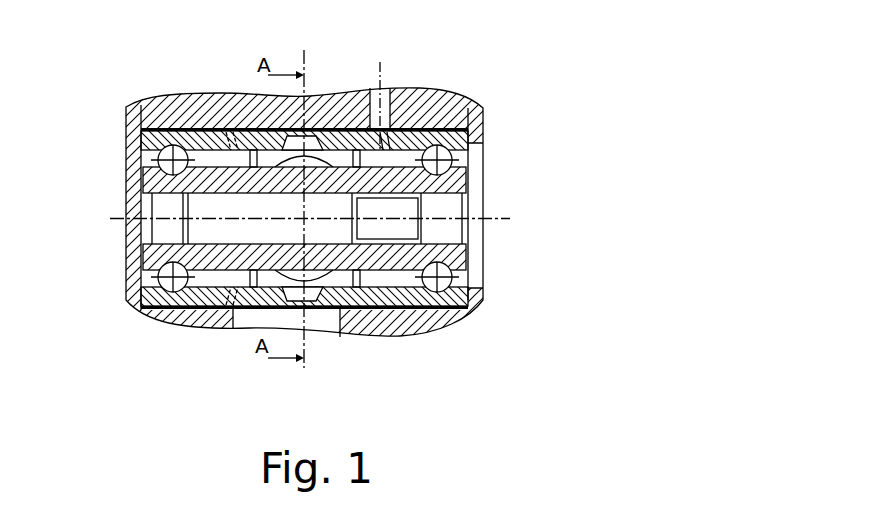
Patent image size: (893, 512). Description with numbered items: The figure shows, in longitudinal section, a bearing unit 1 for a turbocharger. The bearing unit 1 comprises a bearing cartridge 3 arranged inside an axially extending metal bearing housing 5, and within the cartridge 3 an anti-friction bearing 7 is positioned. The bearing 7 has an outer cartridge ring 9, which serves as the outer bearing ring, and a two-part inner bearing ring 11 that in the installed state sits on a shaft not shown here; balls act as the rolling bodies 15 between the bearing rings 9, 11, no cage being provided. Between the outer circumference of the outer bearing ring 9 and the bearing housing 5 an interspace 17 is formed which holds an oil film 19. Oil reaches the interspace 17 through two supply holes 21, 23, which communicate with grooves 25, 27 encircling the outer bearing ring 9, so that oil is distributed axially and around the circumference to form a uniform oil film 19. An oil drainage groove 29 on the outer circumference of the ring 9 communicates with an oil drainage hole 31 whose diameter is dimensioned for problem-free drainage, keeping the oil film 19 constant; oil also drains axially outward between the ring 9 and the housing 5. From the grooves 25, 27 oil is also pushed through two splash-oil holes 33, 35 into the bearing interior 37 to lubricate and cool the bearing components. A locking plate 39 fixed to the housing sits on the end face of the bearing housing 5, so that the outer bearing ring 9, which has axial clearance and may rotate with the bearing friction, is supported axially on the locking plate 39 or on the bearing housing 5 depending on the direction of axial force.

The bearing unit 1 is at (533, 77).
The bearing cartridge 3 is at (99, 313).
The bearing housing 5 is at (462, 112).
The anti-friction bearing 7 is at (497, 153).
The outer cartridge ring 9 is at (480, 140).
The inner bearing ring 11 is at (150, 183).
The rolling bodies 15 is at (455, 162).
The interspace 17 is at (282, 202).
The oil film 19 is at (263, 119).
The supply hole 21 is at (218, 106).
The supply hole 23 is at (384, 100).
The groove 25 is at (243, 140).
The groove 27 is at (370, 100).
The oil drainage groove 29 is at (314, 135).
The oil drainage hole 31 is at (316, 318).
The splash-oil hole 33 is at (200, 130).
The splash-oil hole 35 is at (400, 108).
The bearing interior 37 is at (146, 187).
The locking plate 39 is at (126, 107).